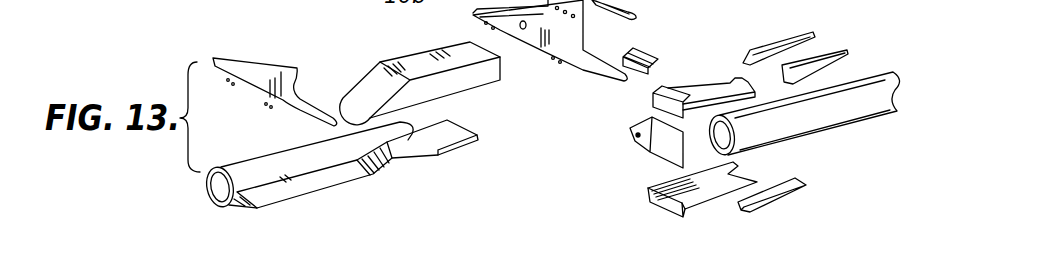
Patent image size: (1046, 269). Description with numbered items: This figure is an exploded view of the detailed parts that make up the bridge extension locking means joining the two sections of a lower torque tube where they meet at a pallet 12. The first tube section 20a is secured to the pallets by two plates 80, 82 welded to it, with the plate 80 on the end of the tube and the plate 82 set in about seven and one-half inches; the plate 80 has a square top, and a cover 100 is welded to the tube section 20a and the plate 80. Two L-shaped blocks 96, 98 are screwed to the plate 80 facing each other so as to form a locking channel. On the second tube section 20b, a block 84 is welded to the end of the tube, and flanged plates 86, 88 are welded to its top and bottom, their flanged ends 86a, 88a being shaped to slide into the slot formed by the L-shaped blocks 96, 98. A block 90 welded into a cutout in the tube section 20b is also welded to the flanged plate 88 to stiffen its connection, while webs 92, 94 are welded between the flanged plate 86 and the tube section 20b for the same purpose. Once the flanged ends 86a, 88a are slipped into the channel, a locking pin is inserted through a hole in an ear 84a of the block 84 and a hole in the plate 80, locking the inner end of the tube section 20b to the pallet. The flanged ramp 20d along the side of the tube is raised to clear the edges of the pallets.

The pallet 12 is at (121, 0).
The plate 80 is at (550, 40).
The plate 82 is at (258, 72).
The cover 100 is at (413, 60).
The L-shaped block 96 is at (636, 14).
The L-shaped block 98 is at (661, 63).
The flanged plate 86 is at (700, 88).
The flanged end 86a is at (650, 101).
The block 84 is at (660, 150).
The ear 84a is at (634, 134).
The flanged plate 88 is at (717, 200).
The flanged end 88a is at (672, 210).
The block 90 is at (775, 205).
The web 92 is at (776, 40).
The web 94 is at (832, 52).
The tube section 20a is at (263, 163).
The tube section 20b is at (847, 114).
The flanged ramp 20d is at (325, 177).